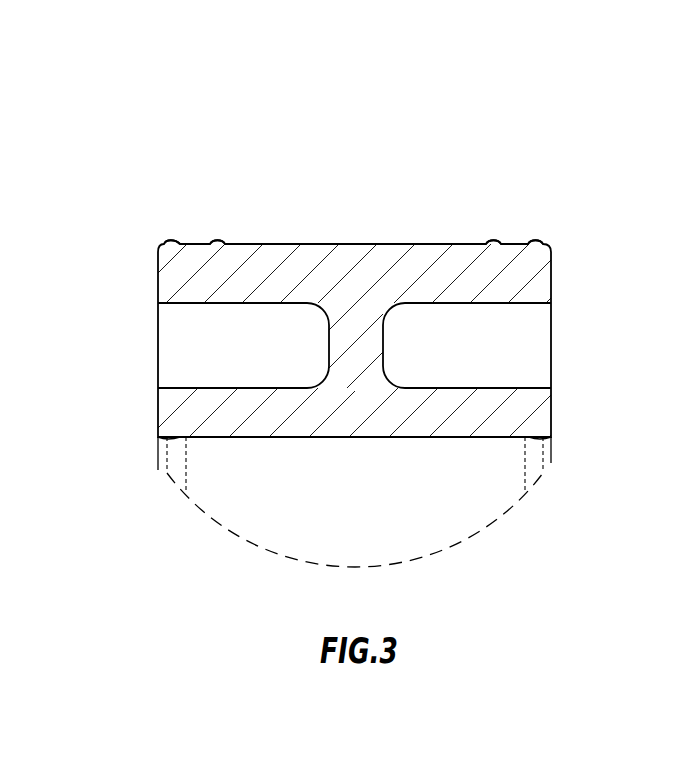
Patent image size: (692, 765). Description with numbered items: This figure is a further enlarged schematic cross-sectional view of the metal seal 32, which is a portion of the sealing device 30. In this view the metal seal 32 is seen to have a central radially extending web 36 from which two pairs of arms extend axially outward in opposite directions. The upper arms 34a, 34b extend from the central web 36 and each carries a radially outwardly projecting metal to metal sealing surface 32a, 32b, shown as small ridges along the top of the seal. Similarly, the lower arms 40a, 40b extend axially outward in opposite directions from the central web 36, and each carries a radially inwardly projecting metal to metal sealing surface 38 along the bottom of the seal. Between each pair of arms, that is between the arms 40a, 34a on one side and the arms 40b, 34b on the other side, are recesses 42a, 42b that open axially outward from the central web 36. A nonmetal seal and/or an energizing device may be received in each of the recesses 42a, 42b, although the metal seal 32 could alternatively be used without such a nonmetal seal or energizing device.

The sealing device 30 is at (544, 135).
The metal seal 32 is at (308, 243).
The metal to metal sealing surface 32a is at (172, 240).
The metal to metal sealing surface 32b is at (217, 240).
The arm 34a is at (180, 273).
The arm 34b is at (530, 275).
The central radially extending web 36 is at (328, 344).
The metal to metal sealing surfaces 38 is at (175, 438).
The arm 40a is at (190, 410).
The arm 40b is at (537, 415).
The recess 42a is at (200, 348).
The recess 42b is at (525, 350).